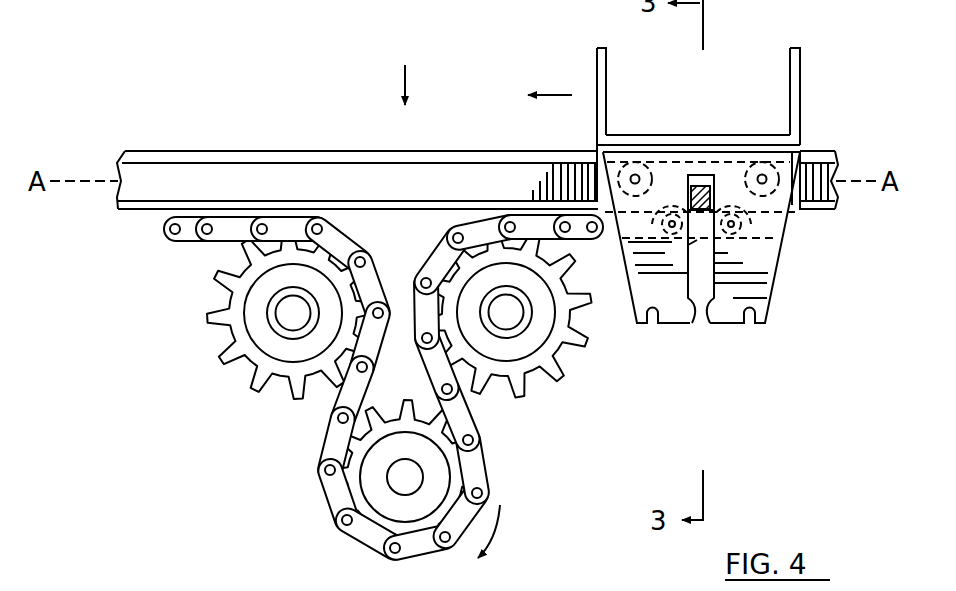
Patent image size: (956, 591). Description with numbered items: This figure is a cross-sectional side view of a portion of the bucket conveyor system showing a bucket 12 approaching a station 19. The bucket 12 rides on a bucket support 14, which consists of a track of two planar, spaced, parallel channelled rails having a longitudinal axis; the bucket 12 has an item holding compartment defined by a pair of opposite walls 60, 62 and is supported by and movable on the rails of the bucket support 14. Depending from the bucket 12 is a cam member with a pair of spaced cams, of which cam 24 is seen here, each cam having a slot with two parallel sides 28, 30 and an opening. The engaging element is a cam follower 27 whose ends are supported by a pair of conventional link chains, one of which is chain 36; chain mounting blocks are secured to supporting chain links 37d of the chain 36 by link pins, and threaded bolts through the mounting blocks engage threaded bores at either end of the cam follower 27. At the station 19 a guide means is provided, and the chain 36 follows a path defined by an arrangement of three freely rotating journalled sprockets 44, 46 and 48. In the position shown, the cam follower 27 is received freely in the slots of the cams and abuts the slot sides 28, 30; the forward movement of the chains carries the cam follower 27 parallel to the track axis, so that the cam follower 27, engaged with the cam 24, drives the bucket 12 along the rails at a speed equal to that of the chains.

The bucket 12 is at (806, 100).
The bucket support 14 is at (830, 142).
The station 19 is at (405, 72).
The cam 24 is at (773, 290).
The cam follower 27 is at (703, 180).
The slot side 28 is at (697, 310).
The slot side 30 is at (712, 307).
The link chain 36 is at (205, 247).
The supporting chain link 37d is at (697, 240).
The sprocket 44 is at (546, 352).
The sprocket 46 is at (353, 477).
The sprocket 48 is at (240, 345).
The wall 60 is at (801, 60).
The wall 62 is at (597, 75).